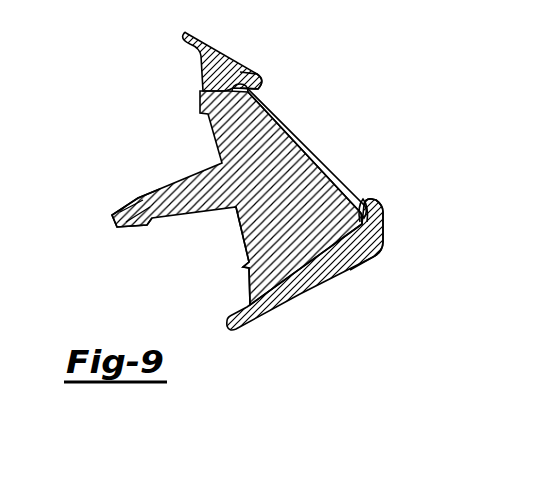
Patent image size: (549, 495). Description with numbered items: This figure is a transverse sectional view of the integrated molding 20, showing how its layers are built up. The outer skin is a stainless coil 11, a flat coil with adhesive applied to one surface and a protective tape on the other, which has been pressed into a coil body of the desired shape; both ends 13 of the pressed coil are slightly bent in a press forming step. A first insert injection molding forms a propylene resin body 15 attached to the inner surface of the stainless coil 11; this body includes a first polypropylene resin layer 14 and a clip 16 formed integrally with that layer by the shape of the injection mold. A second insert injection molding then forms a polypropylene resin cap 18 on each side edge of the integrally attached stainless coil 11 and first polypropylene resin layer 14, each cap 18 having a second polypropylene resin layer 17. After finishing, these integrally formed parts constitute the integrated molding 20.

The stainless coil 11 is at (334, 171).
The ends of the stainless coil 13 is at (256, 95).
The first polypropylene resin layer 14 is at (218, 132).
The propylene resin body 15 is at (236, 236).
The clip 16 is at (130, 206).
The second polypropylene resin layer 17 is at (227, 59).
The polypropylene resin cap 18 is at (262, 67).
The integrated molding 20 is at (334, 132).